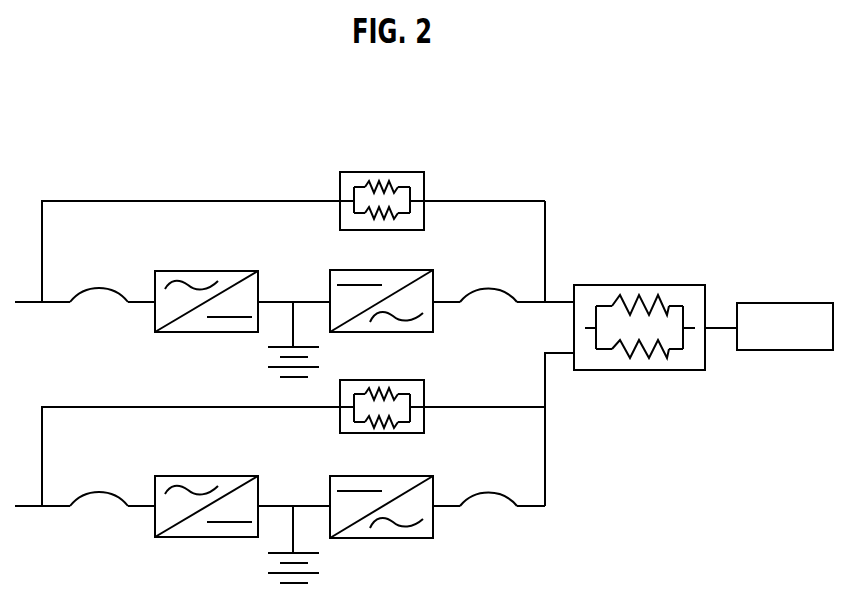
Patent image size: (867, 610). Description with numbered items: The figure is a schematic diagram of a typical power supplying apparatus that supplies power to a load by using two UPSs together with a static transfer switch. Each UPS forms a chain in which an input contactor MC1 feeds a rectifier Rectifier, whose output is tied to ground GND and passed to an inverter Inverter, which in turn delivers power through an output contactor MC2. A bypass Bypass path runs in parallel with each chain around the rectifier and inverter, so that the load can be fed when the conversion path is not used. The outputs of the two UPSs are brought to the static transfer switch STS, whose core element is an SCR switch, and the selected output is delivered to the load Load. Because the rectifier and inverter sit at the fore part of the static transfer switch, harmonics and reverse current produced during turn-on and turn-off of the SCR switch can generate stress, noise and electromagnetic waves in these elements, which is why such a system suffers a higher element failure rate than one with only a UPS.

The input magnetic contactor MC1 is at (99, 380).
The output magnetic contactor MC2 is at (488, 382).
The rectifier Rectifier is at (206, 388).
The inverter Inverter is at (381, 388).
The bypass Bypass is at (382, 285).
The ground GND is at (293, 442).
The static transfer switch STS is at (639, 311).
The load Load is at (785, 326).